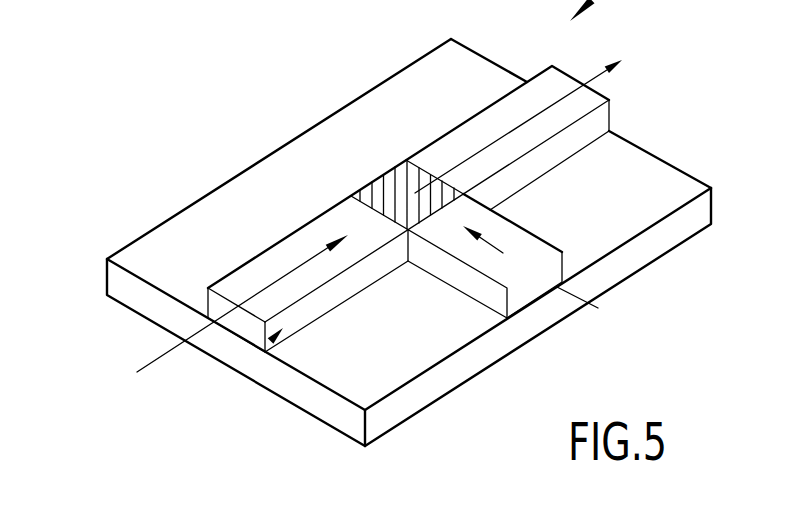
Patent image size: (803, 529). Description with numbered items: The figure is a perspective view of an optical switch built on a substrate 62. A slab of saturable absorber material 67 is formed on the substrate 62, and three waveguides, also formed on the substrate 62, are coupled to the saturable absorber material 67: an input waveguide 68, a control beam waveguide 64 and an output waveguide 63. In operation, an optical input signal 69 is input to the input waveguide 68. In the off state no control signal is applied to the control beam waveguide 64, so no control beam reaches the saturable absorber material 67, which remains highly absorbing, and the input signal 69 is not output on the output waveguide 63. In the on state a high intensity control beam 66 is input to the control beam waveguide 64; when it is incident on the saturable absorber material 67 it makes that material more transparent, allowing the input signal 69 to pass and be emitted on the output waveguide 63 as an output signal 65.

The substrate 62 is at (260, 184).
The output waveguide 63 is at (590, 135).
The control beam waveguide 64 is at (483, 310).
The output signal 65 is at (594, 81).
The control beam 66 is at (577, 296).
The saturable absorber material 67 is at (399, 170).
The input waveguide 68 is at (272, 339).
The optical input signal 69 is at (148, 363).